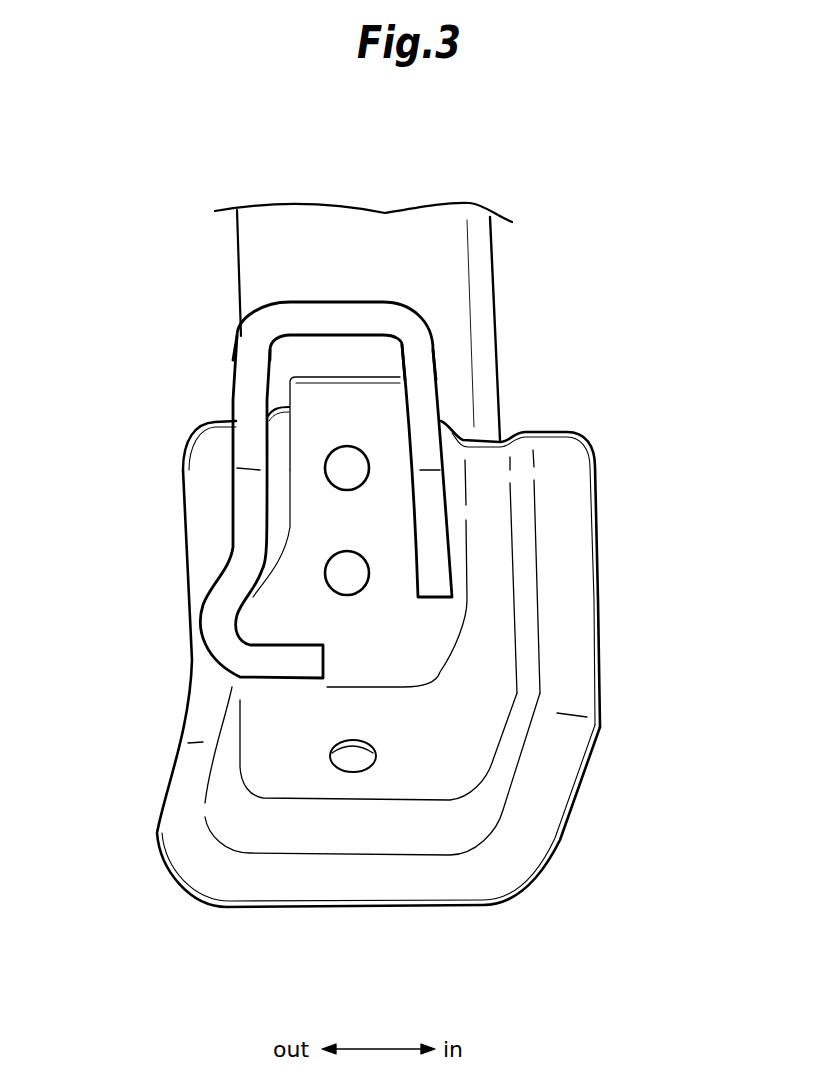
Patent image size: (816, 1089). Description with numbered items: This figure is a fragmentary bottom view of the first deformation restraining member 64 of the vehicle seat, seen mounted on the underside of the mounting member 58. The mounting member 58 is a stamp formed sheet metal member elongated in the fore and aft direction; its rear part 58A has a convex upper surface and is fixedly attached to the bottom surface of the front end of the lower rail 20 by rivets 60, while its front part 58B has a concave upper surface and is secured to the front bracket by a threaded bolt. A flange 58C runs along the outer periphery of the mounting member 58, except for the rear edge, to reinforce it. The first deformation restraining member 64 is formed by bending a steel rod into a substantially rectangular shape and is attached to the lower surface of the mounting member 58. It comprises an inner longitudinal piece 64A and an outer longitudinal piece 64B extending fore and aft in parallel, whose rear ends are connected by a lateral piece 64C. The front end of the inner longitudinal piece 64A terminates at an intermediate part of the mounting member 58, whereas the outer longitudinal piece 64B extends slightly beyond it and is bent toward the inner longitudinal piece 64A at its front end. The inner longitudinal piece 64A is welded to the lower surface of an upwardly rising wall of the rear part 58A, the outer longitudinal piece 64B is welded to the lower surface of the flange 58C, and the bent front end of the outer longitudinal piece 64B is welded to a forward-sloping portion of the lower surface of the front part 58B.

The lower rail 20 is at (250, 268).
The mounting member 58 is at (421, 683).
The rear part 58A is at (497, 500).
The front part 58B is at (327, 777).
The flange 58C is at (550, 789).
The rivets 60 is at (351, 478).
The first deformation restraining member 64 is at (388, 425).
The inner longitudinal piece 64A is at (437, 557).
The outer longitudinal piece 64B is at (248, 501).
The lateral piece 64C is at (320, 312).